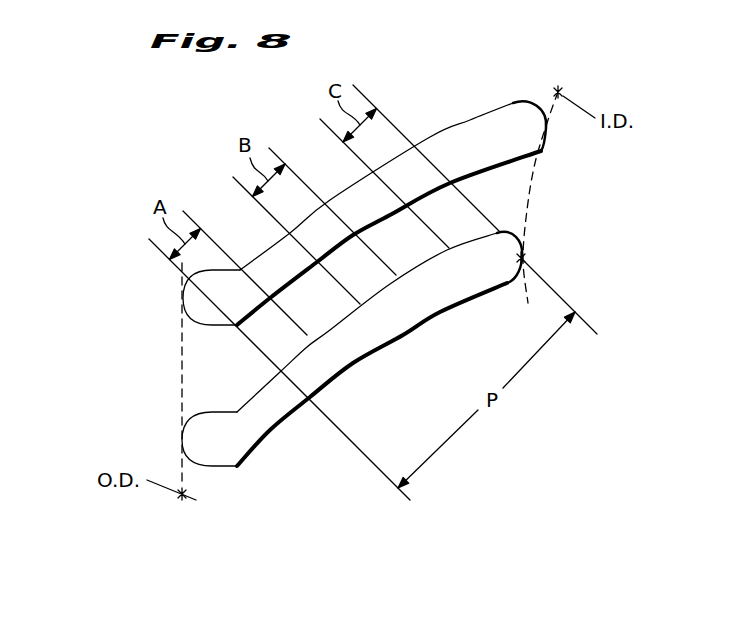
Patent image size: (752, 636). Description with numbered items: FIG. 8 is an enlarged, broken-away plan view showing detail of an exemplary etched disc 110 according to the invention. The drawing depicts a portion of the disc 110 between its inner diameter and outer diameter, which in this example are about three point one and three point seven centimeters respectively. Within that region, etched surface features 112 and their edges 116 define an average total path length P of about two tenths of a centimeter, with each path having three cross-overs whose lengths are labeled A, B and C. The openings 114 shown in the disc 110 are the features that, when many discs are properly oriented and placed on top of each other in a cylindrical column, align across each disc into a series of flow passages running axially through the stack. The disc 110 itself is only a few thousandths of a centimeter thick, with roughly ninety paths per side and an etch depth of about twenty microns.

The etched disc 110 is at (299, 280).
The crest of corrugation 112 is at (368, 290).
The openings 114 is at (325, 313).
The flank edge of corrugation 116 is at (467, 132).